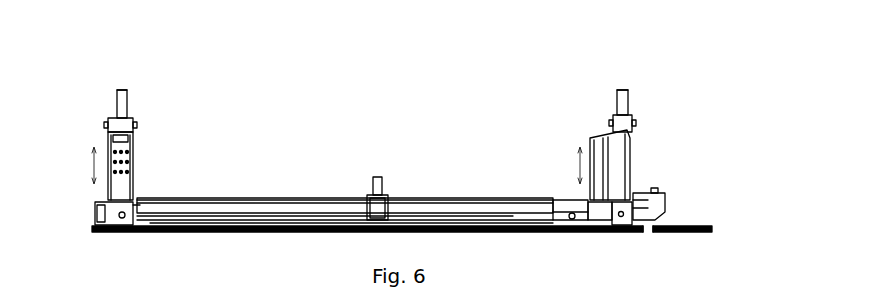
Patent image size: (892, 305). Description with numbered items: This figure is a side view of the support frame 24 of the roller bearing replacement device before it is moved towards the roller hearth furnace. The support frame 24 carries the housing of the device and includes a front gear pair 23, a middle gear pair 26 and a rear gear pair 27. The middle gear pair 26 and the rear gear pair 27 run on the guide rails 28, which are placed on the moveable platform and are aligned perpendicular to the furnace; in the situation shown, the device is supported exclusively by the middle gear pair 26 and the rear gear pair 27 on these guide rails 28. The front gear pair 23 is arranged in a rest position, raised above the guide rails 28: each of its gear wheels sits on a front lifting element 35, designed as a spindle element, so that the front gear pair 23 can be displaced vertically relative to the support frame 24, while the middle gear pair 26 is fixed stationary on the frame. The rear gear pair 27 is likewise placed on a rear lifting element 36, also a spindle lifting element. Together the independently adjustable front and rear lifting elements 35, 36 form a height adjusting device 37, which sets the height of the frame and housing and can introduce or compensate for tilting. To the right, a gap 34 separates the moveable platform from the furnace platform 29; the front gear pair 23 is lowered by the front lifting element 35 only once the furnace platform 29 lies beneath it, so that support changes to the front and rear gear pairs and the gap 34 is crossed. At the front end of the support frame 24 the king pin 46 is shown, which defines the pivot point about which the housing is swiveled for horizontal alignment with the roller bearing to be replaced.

The front gear pair 23 is at (627, 203).
The support frame 24 is at (331, 174).
The middle gear pair 26 is at (553, 200).
The rear gear pair 27 is at (140, 197).
The guide rails 28 is at (283, 233).
The furnace platform 29 is at (693, 233).
The gap 34 is at (653, 242).
The front lifting element 35 is at (603, 130).
The rear lifting element 36 is at (135, 138).
The height adjusting device 37 is at (580, 60).
The king pin 46 is at (653, 197).